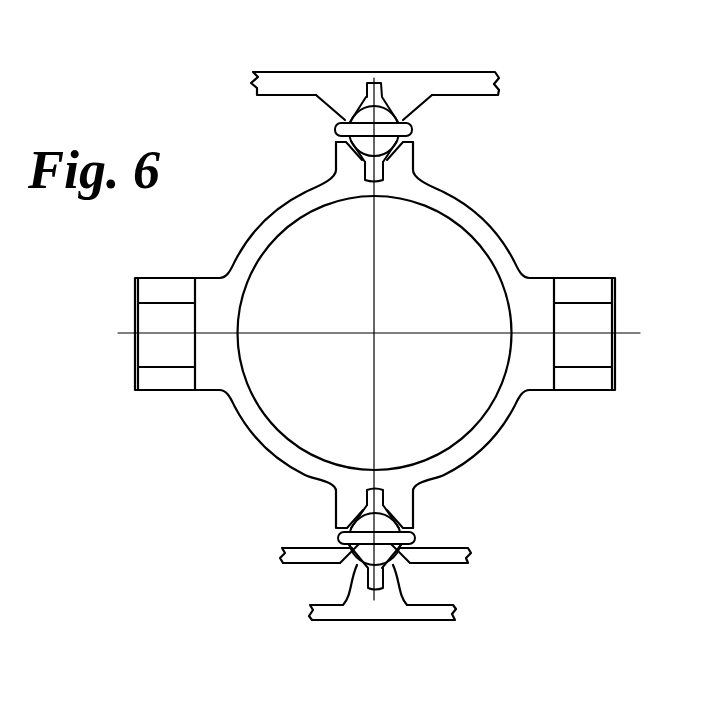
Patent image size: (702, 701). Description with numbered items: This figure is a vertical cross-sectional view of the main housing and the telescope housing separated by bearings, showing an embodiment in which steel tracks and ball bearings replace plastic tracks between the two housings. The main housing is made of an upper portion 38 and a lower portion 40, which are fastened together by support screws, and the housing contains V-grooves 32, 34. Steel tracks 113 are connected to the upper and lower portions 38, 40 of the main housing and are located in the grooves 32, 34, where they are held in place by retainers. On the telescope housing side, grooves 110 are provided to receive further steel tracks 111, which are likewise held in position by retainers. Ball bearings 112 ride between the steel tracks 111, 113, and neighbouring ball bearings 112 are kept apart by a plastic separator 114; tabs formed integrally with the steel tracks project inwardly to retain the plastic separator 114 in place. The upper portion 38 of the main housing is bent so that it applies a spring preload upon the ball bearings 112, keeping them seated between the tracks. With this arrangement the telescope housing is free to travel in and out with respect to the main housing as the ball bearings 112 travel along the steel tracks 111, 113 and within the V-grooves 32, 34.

The V-groove 32 is at (355, 108).
The V-groove 34 is at (392, 562).
The upper portion of the main housing 38 is at (472, 77).
The lower portion of the main housing 40 is at (335, 613).
The groove 110 is at (415, 168).
The steel track 111 is at (408, 147).
The ball bearing 112 is at (352, 150).
The steel track 113 is at (390, 103).
The plastic separator 114 is at (415, 127).